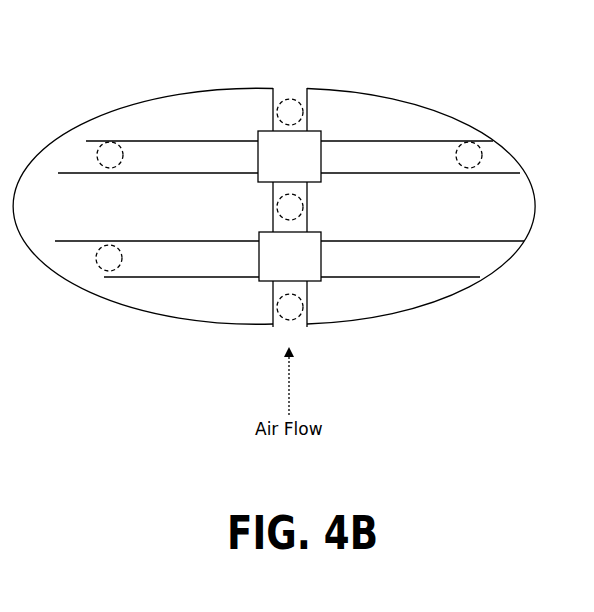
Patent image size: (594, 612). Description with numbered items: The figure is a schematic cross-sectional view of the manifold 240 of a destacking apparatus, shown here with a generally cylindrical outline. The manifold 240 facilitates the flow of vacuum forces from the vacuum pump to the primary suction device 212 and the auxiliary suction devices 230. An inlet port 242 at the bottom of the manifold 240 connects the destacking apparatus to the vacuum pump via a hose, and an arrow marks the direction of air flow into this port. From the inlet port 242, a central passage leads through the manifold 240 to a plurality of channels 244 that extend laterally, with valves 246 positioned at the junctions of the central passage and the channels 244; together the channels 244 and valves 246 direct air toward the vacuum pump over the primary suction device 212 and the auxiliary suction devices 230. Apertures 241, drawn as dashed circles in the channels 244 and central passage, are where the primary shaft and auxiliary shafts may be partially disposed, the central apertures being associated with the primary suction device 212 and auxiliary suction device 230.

The manifold 240 is at (433, 88).
The apertures 241 is at (288, 100).
The auxiliary suction device 230 is at (302, 111).
The primary suction device 212 is at (302, 205).
The inlet port 242 is at (276, 339).
The channels 244 is at (119, 173).
The valves 246 is at (258, 178).